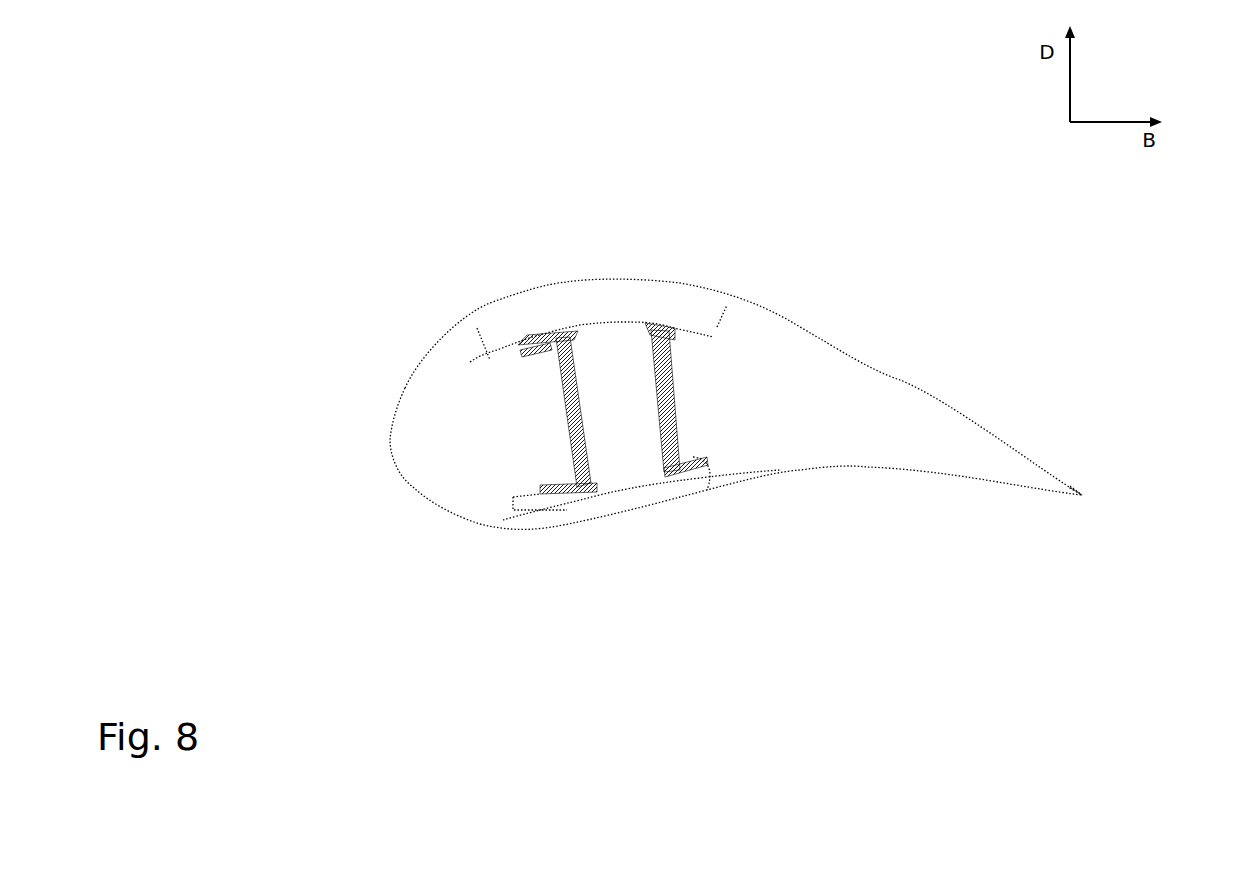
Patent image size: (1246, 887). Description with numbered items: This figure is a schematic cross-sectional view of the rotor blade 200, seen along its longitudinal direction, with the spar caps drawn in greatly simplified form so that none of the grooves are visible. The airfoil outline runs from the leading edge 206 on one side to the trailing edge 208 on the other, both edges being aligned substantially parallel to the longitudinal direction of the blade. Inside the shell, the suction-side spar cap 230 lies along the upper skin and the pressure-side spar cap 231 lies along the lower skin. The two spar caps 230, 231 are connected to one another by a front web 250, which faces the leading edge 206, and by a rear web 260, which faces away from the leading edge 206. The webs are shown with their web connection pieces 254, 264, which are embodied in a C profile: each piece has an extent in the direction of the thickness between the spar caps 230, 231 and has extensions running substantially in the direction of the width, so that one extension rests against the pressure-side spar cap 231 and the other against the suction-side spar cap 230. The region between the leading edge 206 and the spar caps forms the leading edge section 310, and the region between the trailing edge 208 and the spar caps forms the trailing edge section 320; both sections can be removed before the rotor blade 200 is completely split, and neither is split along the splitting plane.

The rotor blade 200 is at (280, 123).
The leading edge 206 is at (393, 443).
The trailing edge 208 is at (1084, 496).
The suction-side spar cap 230 is at (590, 310).
The pressure-side spar cap 231 is at (582, 508).
The front web 250 is at (557, 388).
The web connection piece 254 is at (582, 468).
The rear web 260 is at (671, 443).
The web connection piece 264 is at (668, 367).
The leading edge section 310 is at (418, 501).
The trailing edge section 320 is at (965, 404).